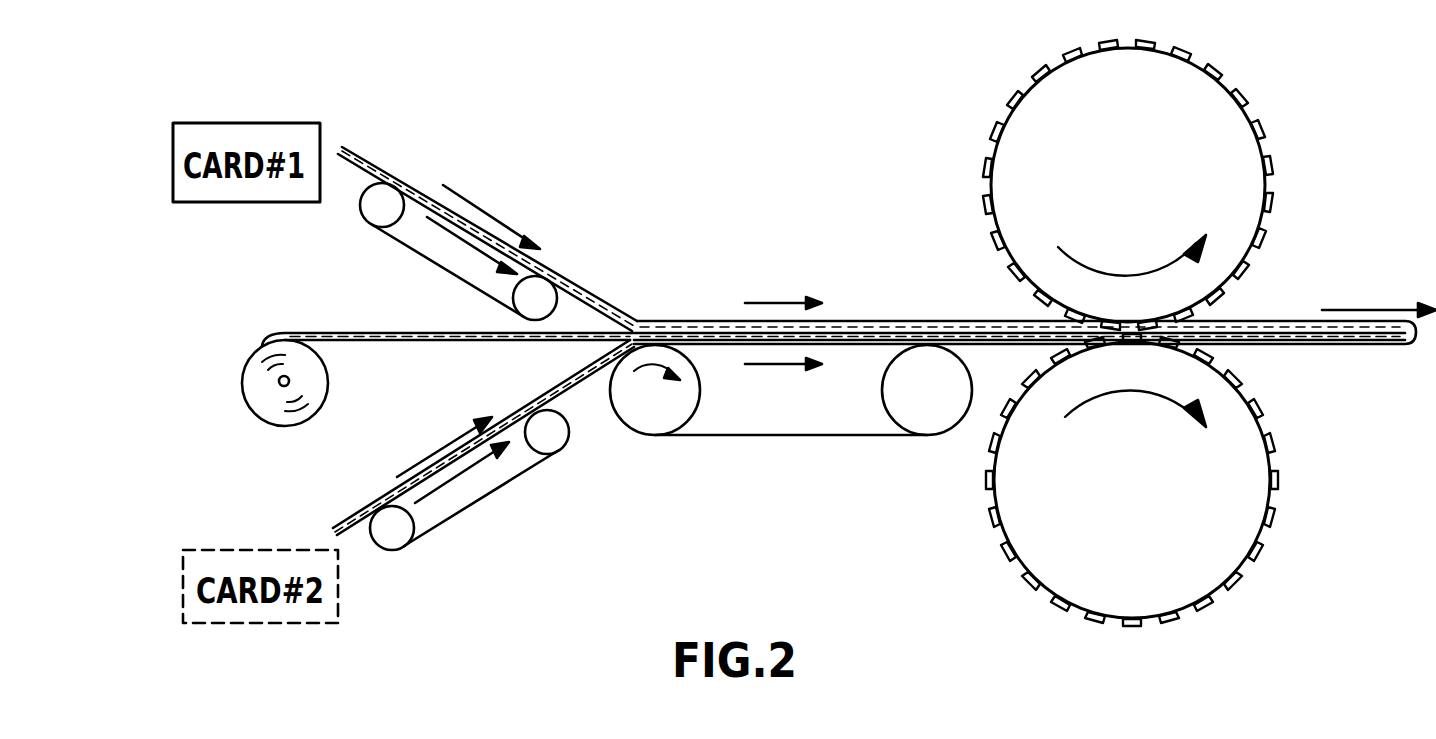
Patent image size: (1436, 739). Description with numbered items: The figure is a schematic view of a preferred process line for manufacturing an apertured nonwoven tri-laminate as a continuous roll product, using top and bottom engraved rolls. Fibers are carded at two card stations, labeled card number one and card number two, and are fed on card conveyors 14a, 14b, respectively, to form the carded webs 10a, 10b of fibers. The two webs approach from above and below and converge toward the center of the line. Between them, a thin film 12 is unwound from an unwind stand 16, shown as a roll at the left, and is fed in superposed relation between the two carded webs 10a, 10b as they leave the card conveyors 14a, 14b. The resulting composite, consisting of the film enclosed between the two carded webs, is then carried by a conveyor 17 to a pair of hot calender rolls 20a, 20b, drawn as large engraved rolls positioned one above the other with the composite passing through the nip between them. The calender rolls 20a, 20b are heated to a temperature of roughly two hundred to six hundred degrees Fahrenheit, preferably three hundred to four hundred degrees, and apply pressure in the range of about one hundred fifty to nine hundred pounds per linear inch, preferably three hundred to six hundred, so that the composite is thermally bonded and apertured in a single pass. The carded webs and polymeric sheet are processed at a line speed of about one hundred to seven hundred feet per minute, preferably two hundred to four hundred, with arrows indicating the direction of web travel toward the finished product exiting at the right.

The carded web 10a is at (397, 177).
The carded web 10b is at (387, 507).
The thin film 12 is at (312, 328).
The card conveyor 14a is at (413, 237).
The card conveyor 14b is at (477, 492).
The unwind stand 16 is at (280, 384).
The conveyor 17 is at (765, 413).
The hot calender roll 20a is at (1210, 153).
The hot calender roll 20b is at (1212, 523).